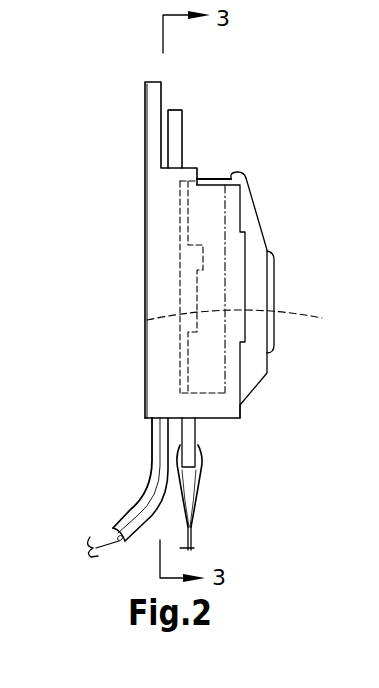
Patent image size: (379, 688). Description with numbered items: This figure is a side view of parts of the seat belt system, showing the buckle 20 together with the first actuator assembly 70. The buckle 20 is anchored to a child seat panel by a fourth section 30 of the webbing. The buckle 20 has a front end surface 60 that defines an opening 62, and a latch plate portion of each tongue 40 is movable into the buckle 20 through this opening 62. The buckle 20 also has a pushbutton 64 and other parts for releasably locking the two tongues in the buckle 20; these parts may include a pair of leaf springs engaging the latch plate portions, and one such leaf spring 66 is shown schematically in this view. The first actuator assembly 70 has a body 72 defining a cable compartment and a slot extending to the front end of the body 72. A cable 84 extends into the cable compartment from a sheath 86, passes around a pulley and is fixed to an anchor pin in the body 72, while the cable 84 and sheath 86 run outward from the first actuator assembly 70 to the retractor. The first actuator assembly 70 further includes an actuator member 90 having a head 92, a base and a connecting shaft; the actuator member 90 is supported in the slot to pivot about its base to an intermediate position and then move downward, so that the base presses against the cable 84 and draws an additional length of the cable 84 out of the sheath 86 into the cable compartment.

The buckle 20 is at (262, 201).
The fourth section of the webbing 30 is at (193, 538).
The tongue 40 is at (370, 13).
The front end surface 60 is at (232, 175).
The opening 62 is at (214, 158).
The pushbutton 64 is at (274, 293).
The leaf spring 66 is at (322, 318).
The first actuator assembly 70 is at (135, 222).
The body 72 is at (153, 318).
The cable 84 is at (90, 537).
The sheath 86 is at (149, 490).
The actuator member 90 is at (193, 118).
The head 92 is at (176, 108).